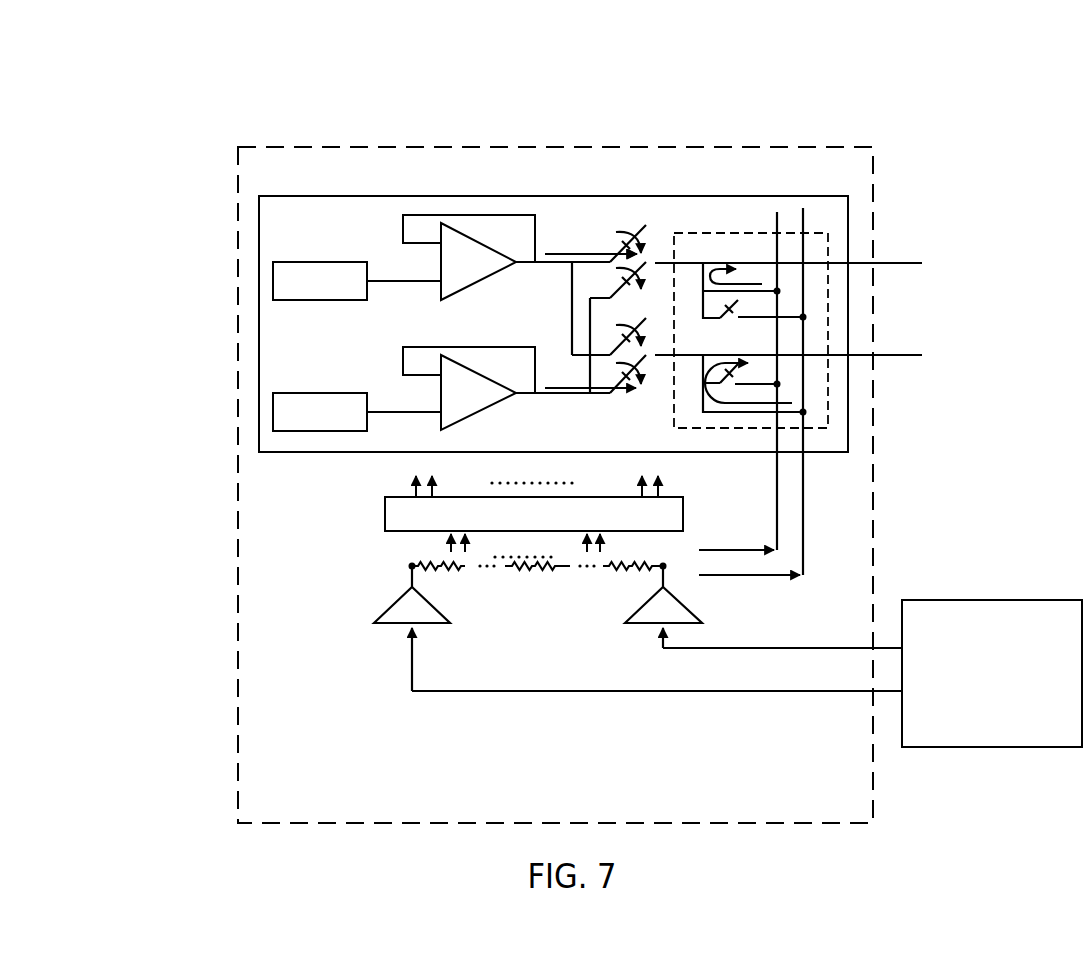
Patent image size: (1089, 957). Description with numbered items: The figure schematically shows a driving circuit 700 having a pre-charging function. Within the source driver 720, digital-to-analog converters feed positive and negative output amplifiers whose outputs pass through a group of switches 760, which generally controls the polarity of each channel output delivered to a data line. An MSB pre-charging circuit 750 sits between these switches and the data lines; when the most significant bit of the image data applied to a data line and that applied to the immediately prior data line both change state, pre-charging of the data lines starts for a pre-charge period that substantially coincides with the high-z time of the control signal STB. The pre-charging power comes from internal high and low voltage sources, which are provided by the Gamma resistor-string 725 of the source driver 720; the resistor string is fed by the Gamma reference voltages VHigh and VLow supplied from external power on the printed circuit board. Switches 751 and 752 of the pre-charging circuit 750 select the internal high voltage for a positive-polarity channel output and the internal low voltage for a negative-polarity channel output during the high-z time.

The driving circuit 700 is at (553, 47).
The source driver 720 is at (238, 503).
The Gamma resistor-string 725 is at (389, 566).
The MSB pre-charging circuit 750 is at (710, 232).
The switch 751 is at (737, 383).
The switch 752 is at (728, 320).
The group of switches 760 is at (623, 218).